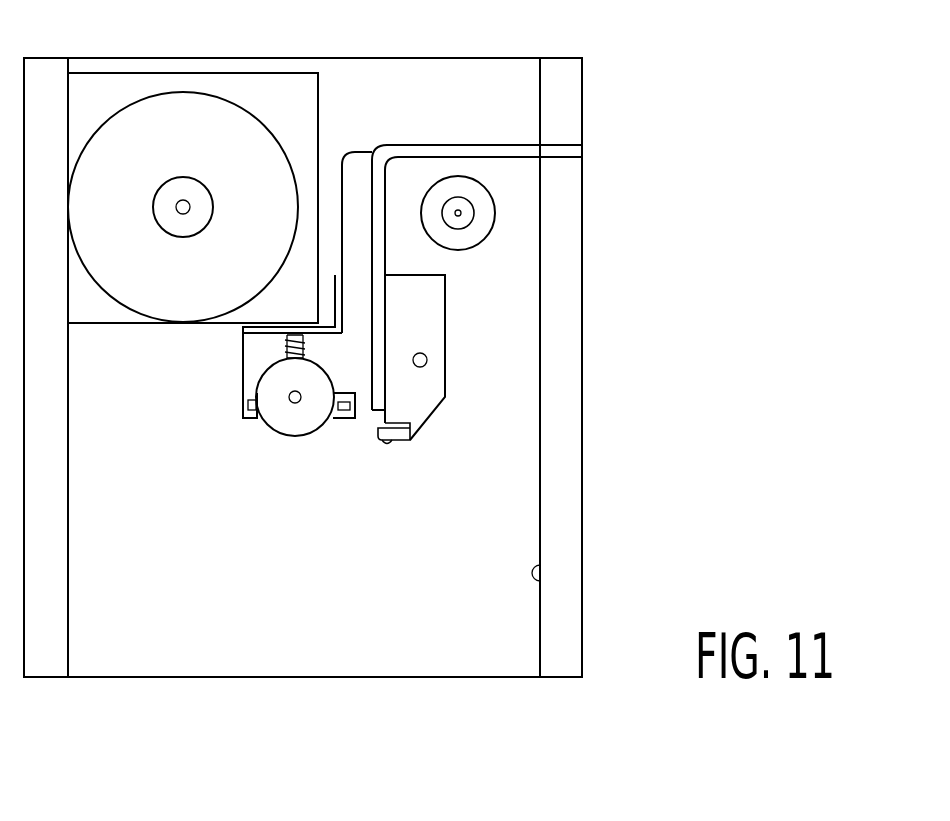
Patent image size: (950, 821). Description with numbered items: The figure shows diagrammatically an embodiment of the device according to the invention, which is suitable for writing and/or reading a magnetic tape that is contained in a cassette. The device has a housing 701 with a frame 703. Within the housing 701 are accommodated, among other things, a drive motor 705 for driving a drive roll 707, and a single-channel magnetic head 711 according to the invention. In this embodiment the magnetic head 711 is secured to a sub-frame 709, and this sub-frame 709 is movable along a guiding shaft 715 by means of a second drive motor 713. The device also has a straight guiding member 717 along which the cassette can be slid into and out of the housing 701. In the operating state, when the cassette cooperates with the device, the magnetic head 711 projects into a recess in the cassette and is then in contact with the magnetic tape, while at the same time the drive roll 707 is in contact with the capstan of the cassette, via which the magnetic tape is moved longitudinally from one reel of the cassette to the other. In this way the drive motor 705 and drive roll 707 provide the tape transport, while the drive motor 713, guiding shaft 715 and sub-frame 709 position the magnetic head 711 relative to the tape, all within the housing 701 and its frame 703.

The housing 701 is at (582, 103).
The frame 703 is at (395, 75).
The drive motor 705 is at (173, 102).
The drive roll 707 is at (292, 425).
The sub-frame 709 is at (428, 313).
The single-channel magnetic head 711 is at (388, 447).
The drive motor 713 is at (488, 219).
The guiding shaft 715 is at (427, 360).
The straight guiding member 717 is at (534, 583).